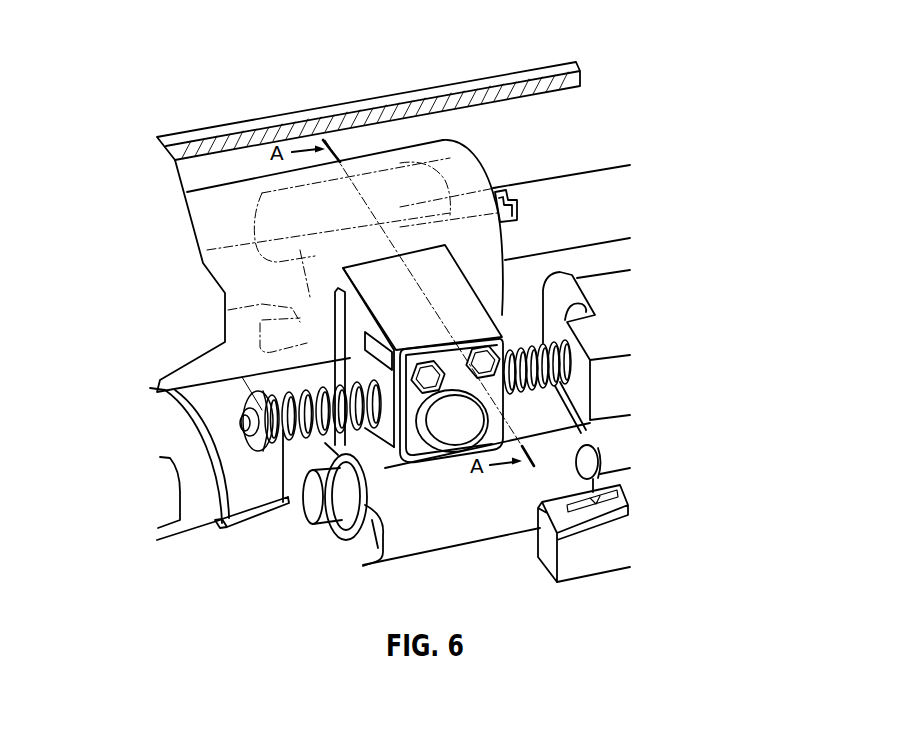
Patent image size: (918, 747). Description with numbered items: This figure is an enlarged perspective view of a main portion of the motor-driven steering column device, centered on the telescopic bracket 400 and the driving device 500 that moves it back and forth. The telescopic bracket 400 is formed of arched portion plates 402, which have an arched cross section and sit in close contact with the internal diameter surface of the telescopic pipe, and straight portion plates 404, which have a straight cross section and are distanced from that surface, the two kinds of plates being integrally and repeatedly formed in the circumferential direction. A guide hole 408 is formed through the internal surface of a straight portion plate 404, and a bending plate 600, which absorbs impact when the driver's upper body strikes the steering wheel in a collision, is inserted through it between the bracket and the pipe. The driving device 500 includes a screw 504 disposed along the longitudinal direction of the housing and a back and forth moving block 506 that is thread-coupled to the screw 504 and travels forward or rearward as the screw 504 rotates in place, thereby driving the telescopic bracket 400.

The telescopic bracket 400 is at (390, 160).
The arched portion plate 402 is at (410, 168).
The straight portion plate 404 is at (445, 193).
The guide hole 408 is at (222, 310).
The driving device 500 is at (603, 383).
The screw 504 is at (577, 343).
The back and forth moving block 506 is at (480, 260).
The bending plate 600 is at (277, 237).